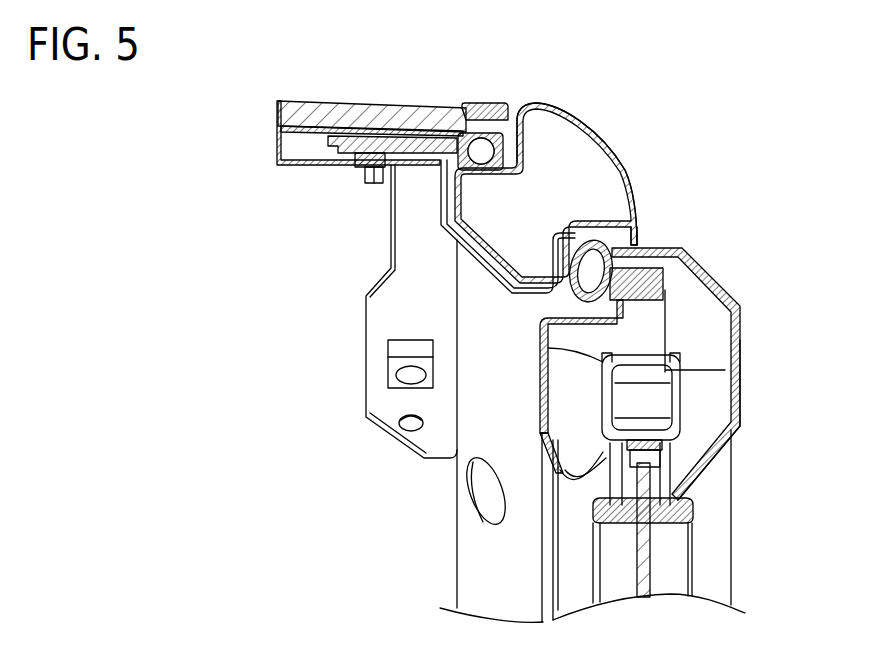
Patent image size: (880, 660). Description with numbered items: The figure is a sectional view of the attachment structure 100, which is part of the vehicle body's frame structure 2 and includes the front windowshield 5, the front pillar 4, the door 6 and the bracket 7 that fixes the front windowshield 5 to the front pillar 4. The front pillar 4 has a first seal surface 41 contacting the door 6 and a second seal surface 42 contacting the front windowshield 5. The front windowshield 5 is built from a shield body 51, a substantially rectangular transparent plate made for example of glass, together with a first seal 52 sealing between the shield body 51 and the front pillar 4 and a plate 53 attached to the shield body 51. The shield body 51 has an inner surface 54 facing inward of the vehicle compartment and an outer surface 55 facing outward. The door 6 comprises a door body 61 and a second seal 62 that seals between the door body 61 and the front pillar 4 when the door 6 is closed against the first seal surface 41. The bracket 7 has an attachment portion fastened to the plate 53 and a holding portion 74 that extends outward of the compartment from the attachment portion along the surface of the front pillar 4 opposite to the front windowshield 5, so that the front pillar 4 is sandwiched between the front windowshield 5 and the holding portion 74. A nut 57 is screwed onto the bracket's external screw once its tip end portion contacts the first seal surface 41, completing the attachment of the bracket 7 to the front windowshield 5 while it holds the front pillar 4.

The attachment structure 100 is at (622, 113).
The frame structure 2 is at (570, 110).
The front pillar 4 is at (633, 169).
The first seal surface 41 is at (643, 215).
The second seal surface 42 is at (522, 146).
The front windowshield 5 is at (360, 106).
The shield body 51 is at (418, 107).
The first seal 52 is at (508, 150).
The plate 53 is at (326, 138).
The inner surface 54 is at (280, 137).
The outer surface 55 is at (297, 100).
The nut 57 is at (358, 170).
The door 6 is at (747, 352).
The door body 61 is at (745, 397).
The second seal 62 is at (630, 250).
The bracket 7 is at (440, 193).
The holding portion 74 is at (477, 262).